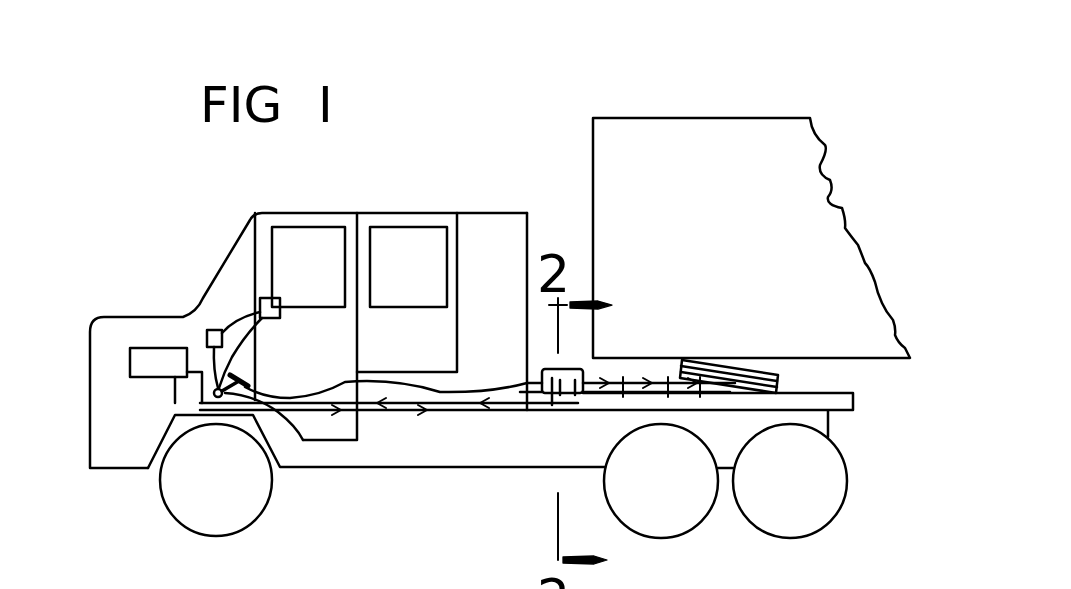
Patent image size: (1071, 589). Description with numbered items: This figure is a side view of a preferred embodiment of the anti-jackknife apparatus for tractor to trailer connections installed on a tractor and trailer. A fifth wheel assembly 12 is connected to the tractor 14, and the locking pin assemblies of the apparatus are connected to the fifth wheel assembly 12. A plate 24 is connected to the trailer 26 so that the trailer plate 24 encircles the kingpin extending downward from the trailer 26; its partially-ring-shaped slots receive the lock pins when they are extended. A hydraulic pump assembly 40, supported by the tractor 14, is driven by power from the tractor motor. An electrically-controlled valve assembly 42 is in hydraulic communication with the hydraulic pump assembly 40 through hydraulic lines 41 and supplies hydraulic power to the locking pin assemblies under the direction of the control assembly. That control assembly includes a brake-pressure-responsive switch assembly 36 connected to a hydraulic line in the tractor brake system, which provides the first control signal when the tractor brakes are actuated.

The fifth wheel assembly 12 is at (788, 381).
The tractor 14 is at (265, 213).
The plate 24 is at (748, 362).
The trailer 26 is at (613, 140).
The brake-pressure-responsive switch assembly 36 is at (213, 388).
The hydraulic pump assembly 40 is at (133, 358).
The hydraulic lines 41 is at (405, 410).
The electrically-controlled valve assembly 42 is at (563, 380).